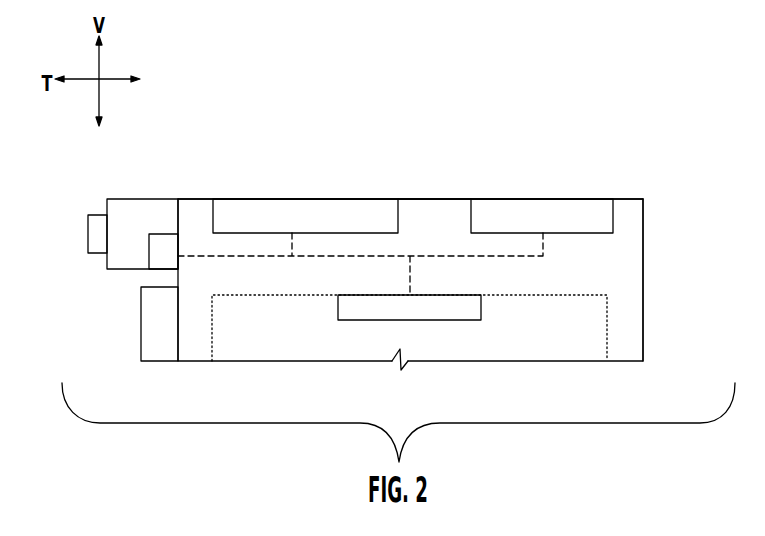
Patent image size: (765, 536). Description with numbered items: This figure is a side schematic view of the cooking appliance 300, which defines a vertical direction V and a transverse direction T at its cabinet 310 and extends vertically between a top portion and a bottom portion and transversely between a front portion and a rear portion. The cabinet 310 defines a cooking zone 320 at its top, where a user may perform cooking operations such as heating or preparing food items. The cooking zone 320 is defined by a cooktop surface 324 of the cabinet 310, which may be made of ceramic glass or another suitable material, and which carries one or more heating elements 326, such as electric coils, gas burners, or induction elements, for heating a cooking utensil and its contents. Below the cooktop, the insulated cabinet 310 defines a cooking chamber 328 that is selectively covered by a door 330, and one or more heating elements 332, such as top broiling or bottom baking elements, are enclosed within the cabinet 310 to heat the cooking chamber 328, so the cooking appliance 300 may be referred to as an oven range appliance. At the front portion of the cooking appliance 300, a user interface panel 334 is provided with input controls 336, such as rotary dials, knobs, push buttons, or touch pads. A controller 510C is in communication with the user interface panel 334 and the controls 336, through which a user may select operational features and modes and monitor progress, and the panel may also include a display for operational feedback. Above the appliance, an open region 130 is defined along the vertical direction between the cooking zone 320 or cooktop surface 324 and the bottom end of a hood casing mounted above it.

The open region 130 is at (421, 150).
The cooking appliance 300 is at (664, 273).
The cabinet 310 is at (635, 343).
The cooking zone 320 is at (341, 189).
The cooktop surface 324 is at (432, 198).
The heating elements 326 is at (245, 210).
The cooking chamber 328 is at (497, 346).
The door 330 is at (152, 340).
The heating elements 332 is at (345, 308).
The user interface panel 334 is at (106, 212).
The controls 336 is at (90, 240).
The controller 510C is at (157, 260).